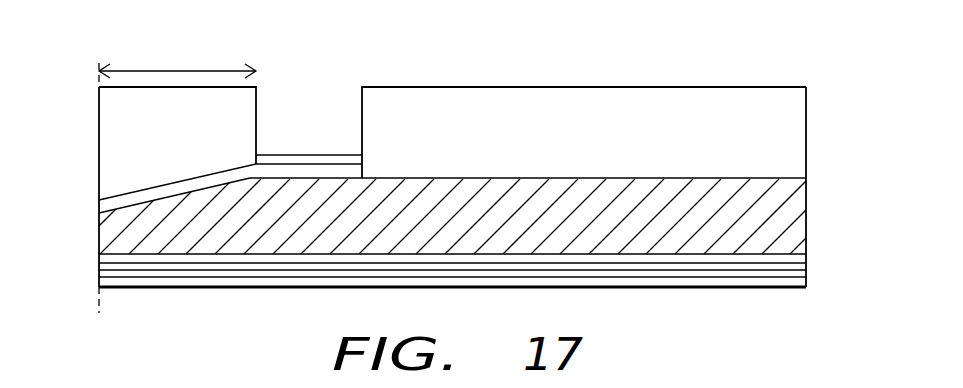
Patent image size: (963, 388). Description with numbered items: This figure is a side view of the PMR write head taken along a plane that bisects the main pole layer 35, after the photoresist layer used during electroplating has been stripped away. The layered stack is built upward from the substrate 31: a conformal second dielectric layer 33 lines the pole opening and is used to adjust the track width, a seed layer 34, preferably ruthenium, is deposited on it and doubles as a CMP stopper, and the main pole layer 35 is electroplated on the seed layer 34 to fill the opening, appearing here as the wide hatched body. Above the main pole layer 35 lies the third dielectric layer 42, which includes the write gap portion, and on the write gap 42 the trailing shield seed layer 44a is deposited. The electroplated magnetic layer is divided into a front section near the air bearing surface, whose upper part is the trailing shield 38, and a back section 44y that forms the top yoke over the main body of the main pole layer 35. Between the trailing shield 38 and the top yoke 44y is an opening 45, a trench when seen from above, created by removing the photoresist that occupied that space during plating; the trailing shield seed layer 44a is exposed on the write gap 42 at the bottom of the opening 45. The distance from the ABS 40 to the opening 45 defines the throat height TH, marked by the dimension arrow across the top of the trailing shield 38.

The substrate 31 is at (797, 287).
The second dielectric layer 33 is at (797, 269).
The seed layer 34 is at (797, 257).
The main pole layer 35 is at (797, 204).
The trailing shield 38 is at (118, 139).
The ABS 40 is at (99, 63).
The third dielectric layer 42 is at (118, 205).
The trailing shield seed layer 44a is at (306, 161).
The back section 44y is at (786, 136).
The opening 45 is at (333, 115).
The throat height TH is at (177, 63).